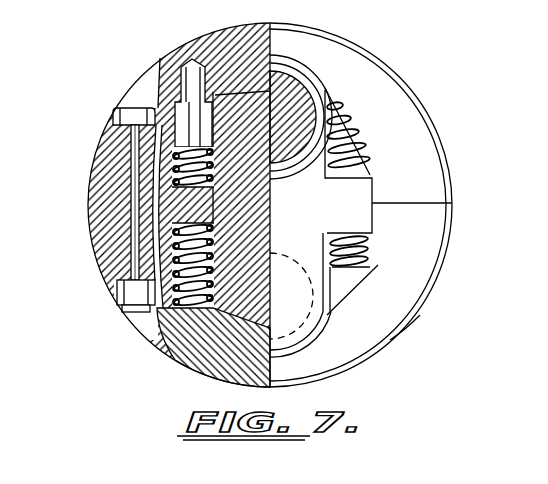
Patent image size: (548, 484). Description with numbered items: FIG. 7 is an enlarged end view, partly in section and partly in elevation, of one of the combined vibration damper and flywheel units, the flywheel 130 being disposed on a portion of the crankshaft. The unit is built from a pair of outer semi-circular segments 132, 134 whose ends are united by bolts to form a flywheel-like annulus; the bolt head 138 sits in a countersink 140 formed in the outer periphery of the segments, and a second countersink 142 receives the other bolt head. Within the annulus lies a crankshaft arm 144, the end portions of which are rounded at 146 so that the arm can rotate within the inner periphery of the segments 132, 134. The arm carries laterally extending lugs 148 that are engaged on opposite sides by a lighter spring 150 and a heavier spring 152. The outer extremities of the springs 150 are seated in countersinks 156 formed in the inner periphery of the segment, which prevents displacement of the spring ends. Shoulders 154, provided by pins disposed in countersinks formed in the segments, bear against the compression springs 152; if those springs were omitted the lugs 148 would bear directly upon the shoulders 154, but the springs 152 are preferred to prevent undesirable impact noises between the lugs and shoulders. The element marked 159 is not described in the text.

The flywheel 130 is at (417, 337).
The outer semi-circular segment 132 is at (375, 85).
The outer semi-circular segment 134 is at (377, 330).
The bolt head 138 is at (120, 112).
The countersink 140 is at (138, 90).
The countersink 142 is at (160, 315).
The crankshaft arm 144 is at (262, 193).
The rounded end portion 146 is at (308, 296).
The laterally extending lug 148 is at (180, 212).
The spring 150 is at (165, 312).
The spring 152 is at (180, 147).
The shoulder 154 is at (340, 276).
The countersink 156 is at (130, 168).
The nut 159 is at (115, 284).